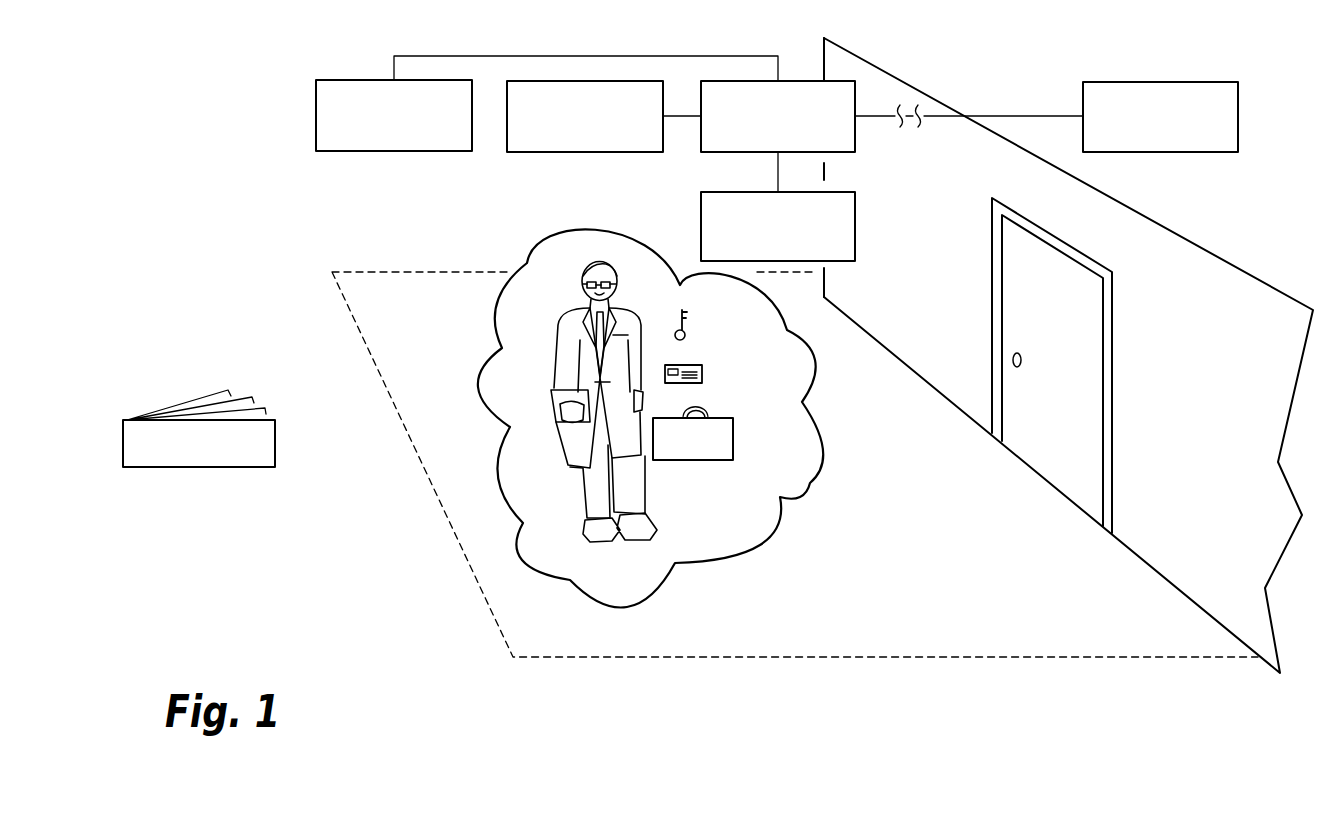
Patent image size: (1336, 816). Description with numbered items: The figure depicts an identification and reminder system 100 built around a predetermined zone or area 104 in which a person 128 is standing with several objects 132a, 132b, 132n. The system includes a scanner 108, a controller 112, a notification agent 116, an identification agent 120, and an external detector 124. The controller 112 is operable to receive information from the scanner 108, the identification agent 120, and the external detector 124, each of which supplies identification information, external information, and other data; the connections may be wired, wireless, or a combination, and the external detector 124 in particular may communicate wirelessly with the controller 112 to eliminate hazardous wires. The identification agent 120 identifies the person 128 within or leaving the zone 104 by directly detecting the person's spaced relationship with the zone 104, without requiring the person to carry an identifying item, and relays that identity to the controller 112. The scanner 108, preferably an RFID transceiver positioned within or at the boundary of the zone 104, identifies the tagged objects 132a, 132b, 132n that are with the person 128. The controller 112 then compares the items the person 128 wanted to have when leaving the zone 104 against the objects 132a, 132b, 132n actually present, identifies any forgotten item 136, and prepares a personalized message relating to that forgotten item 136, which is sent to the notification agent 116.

The identification and reminder system 100 is at (328, 42).
The predetermined zone or area 104 is at (937, 603).
The scanner 108 is at (855, 232).
The controller 112 is at (800, 81).
The notification agent 116 is at (568, 152).
The identification agent 120 is at (316, 116).
The external detector 124 is at (1182, 152).
The person 128 is at (587, 480).
The object 132a is at (712, 308).
The object 132b is at (702, 372).
The object 132n is at (693, 460).
The forgotten item 136 is at (233, 467).